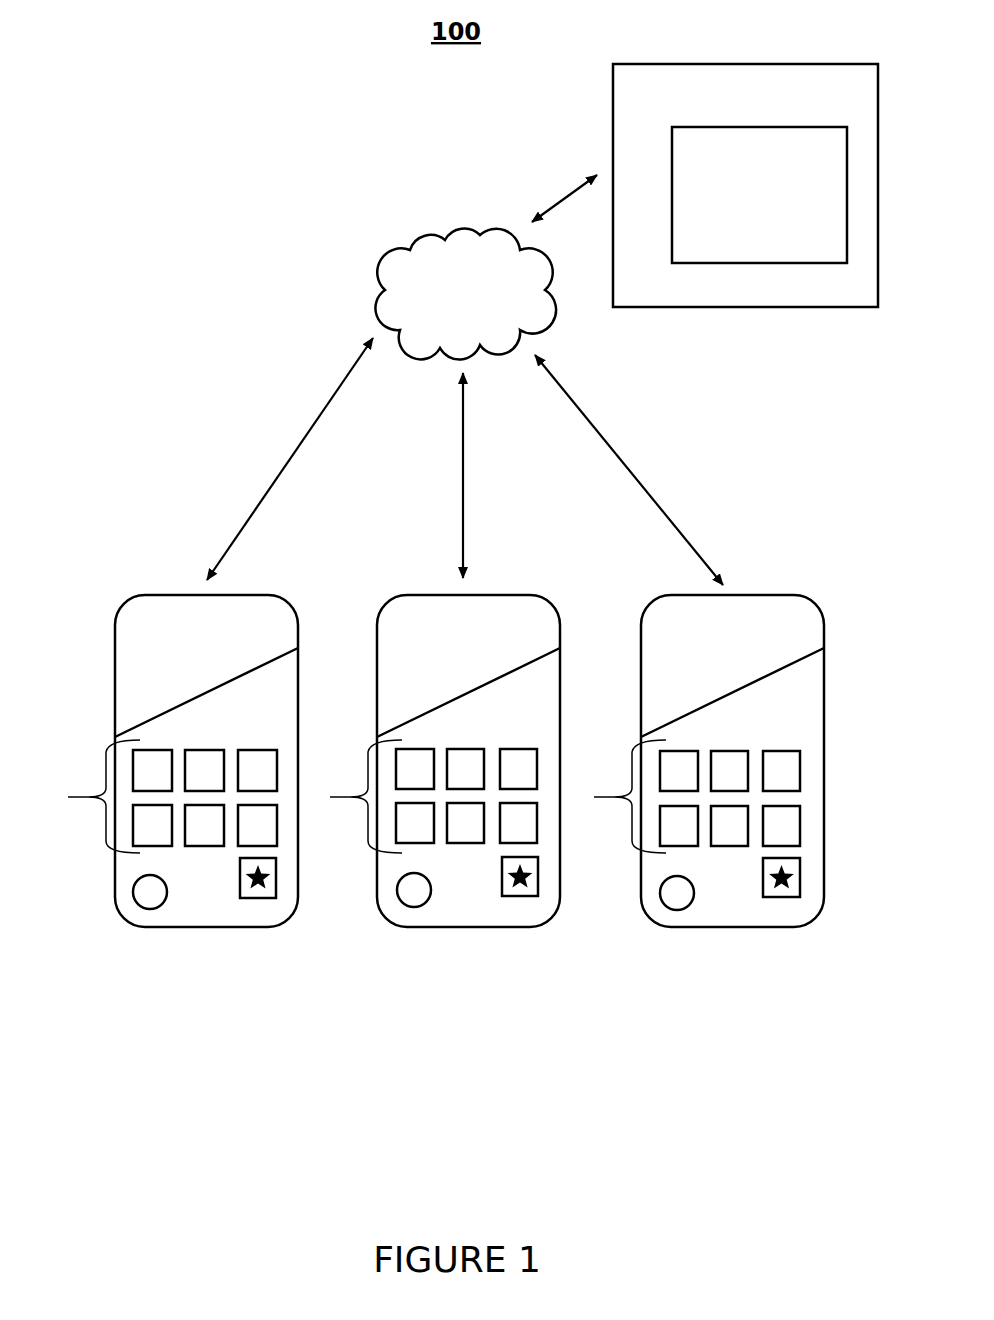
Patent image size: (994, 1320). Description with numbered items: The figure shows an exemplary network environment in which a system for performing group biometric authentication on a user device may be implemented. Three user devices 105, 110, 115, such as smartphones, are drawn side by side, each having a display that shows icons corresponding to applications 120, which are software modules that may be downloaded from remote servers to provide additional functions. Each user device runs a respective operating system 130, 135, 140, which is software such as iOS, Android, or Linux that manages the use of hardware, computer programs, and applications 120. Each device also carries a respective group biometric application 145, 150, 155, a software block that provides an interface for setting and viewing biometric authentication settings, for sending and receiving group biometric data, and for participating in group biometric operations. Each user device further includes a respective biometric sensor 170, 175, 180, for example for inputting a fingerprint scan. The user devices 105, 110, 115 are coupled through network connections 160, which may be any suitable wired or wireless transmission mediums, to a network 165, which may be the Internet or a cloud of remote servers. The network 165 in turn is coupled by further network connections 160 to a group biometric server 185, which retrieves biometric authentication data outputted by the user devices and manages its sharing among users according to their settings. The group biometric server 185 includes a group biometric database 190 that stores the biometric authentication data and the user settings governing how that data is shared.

The user device 105 is at (153, 580).
The user device 110 is at (480, 788).
The user device 115 is at (755, 783).
The applications 120 is at (83, 812).
The operating system 130 is at (188, 636).
The operating system 135 is at (450, 636).
The operating system 140 is at (714, 636).
The group biometric application 145 is at (252, 907).
The group biometric application 150 is at (554, 956).
The group biometric application 155 is at (816, 940).
The network connections 160 is at (465, 370).
The network 165 is at (465, 293).
The biometric sensor 170 is at (158, 912).
The biometric sensor 175 is at (432, 975).
The biometric sensor 180 is at (695, 977).
The group biometric server 185 is at (745, 185).
The group biometric database 190 is at (759, 195).